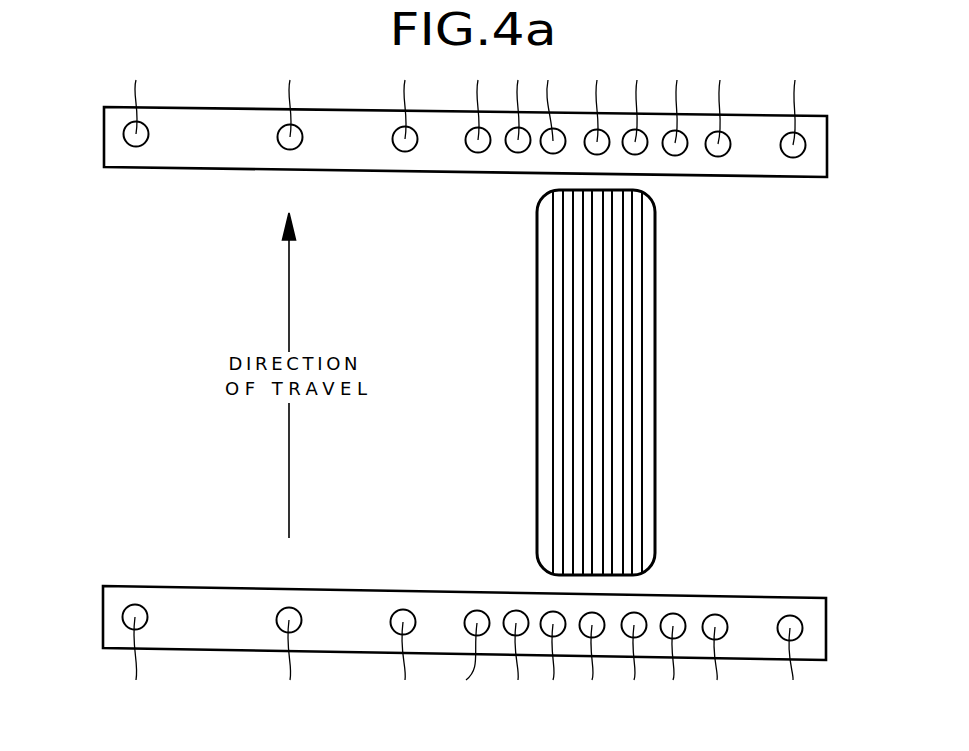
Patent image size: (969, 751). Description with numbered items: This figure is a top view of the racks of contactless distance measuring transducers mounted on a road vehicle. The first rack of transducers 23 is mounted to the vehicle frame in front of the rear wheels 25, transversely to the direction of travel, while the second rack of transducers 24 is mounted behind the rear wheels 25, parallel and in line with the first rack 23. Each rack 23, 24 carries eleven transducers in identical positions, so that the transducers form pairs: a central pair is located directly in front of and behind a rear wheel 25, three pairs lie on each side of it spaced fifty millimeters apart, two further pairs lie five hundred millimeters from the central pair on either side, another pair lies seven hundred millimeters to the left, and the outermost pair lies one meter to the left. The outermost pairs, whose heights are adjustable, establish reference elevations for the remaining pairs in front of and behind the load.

The first rack of transducers 23 is at (128, 586).
The second rack of transducers 24 is at (116, 167).
The rear wheels 25 is at (655, 362).